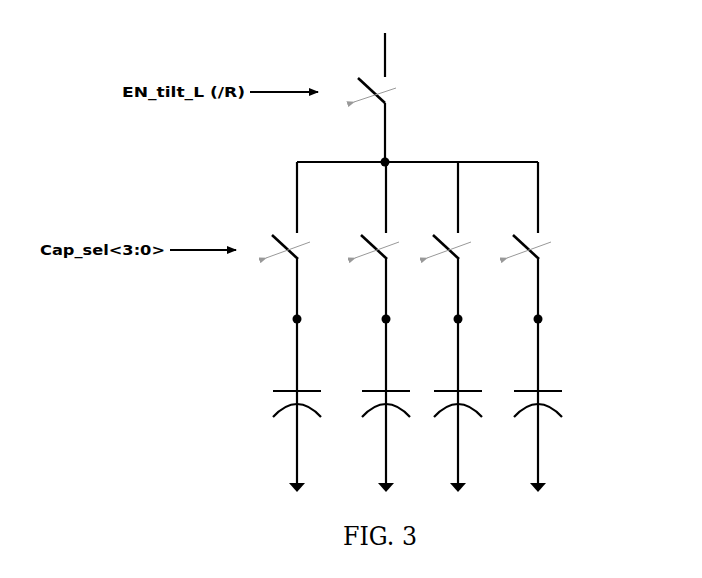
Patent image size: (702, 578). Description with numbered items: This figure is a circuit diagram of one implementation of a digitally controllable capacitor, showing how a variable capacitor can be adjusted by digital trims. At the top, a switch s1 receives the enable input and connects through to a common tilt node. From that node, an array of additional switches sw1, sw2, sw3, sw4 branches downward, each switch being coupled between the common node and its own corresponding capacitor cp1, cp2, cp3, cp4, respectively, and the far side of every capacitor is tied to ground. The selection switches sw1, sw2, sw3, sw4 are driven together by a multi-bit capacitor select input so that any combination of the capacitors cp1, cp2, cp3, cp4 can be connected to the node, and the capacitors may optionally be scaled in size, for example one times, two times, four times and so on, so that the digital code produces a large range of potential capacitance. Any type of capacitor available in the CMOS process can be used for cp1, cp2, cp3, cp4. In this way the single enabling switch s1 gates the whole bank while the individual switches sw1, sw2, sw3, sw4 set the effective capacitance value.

The switch s1 is at (393, 97).
The switch sw1 is at (274, 223).
The switch sw2 is at (369, 223).
The switch sw3 is at (440, 223).
The switch sw4 is at (521, 223).
The capacitor cp1 is at (280, 375).
The capacitor cp2 is at (372, 375).
The capacitor cp3 is at (446, 375).
The capacitor cp4 is at (527, 375).